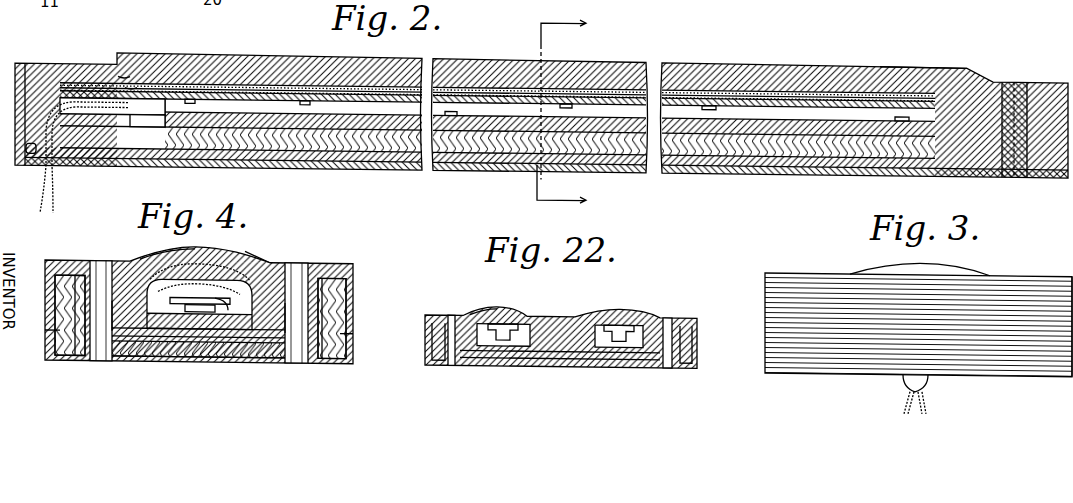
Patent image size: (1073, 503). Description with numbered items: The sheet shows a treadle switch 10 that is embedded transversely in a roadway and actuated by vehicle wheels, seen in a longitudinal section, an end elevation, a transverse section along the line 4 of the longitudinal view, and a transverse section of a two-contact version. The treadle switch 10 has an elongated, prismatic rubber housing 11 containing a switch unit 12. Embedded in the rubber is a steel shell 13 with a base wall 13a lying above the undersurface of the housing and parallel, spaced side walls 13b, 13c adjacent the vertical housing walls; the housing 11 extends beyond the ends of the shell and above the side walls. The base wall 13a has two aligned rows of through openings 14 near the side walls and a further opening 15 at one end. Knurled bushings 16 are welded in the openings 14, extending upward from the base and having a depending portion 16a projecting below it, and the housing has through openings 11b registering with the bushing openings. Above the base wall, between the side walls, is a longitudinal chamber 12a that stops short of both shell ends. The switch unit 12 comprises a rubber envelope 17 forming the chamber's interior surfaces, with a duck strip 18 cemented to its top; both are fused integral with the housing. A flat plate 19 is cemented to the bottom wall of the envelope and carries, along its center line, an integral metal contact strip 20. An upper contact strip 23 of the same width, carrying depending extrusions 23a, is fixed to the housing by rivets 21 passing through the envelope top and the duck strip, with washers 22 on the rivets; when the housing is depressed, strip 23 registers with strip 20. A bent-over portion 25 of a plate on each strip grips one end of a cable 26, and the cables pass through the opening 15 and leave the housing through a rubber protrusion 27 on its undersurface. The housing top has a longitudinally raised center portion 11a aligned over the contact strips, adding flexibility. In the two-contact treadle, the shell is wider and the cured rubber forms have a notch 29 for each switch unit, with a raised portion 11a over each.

In FIG. 2, the section line 4— 4 is at (569, 114).
In FIG. 2, the treadle switch 10 is at (1051, 47).
In FIG. 3, the treadle switch 10 is at (1007, 268).
In FIG. 2, the housing 11 is at (1030, 155).
In FIG. 4, the housing 11 is at (333, 259).
In FIG. 22, the housing 11 is at (697, 335).
In FIG. 3, the housing 11 is at (1058, 312).
In FIG. 2, the raised center portion 11a is at (946, 44).
In FIG. 4, the raised center portion 11a is at (215, 253).
In FIG. 22, the raised center portion 11a is at (620, 306).
In FIG. 3, the raised center portion 11a is at (888, 261).
In FIG. 2, the through openings 11b is at (1017, 58).
In FIG. 4, the through openings 11b is at (96, 261).
In FIG. 22, the through openings 11b is at (452, 315).
In FIG. 2, the switch unit 12 is at (212, 62).
In FIG. 4, the switch unit 12 is at (150, 269).
In FIG. 2, the longitudinal chamber 12a is at (240, 93).
In FIG. 4, the longitudinal chamber 12a is at (170, 361).
In FIG. 2, the steel shell 13 is at (1030, 158).
In FIG. 4, the steel shell 13 is at (228, 360).
In FIG. 22, the steel shell 13 is at (560, 364).
In FIG. 2, the base wall 13a is at (692, 156).
In FIG. 4, the base wall 13a is at (150, 361).
In FIG. 4, the side wall 13b is at (58, 337).
In FIG. 4, the side wall 13c is at (343, 335).
In FIG. 4, the through openings 14 is at (70, 360).
In FIG. 2, the through opening 15 is at (32, 168).
In FIG. 4, the bushings 16 is at (62, 299).
In FIG. 22, the bushings 16 is at (434, 365).
In FIG. 4, the depending portion 16a is at (112, 360).
In FIG. 4, the rubber envelope 17 is at (265, 253).
In FIG. 4, the duck strip 18 is at (232, 261).
In FIG. 2, the flat plate 19 is at (222, 155).
In FIG. 4, the flat plate 19 is at (185, 361).
In FIG. 2, the contact strip 20 is at (298, 156).
In FIG. 4, the contact strip 20 is at (205, 361).
In FIG. 2, the rivets 21 is at (333, 74).
In FIG. 4, the rivets 21 is at (187, 287).
In FIG. 2, the washers 22 is at (362, 78).
In FIG. 4, the washers 22 is at (198, 281).
In FIG. 2, the contact strip 23 is at (683, 78).
In FIG. 4, the contact strip 23 is at (185, 296).
In FIG. 2, the depending extrusions 23a is at (392, 160).
In FIG. 4, the depending extrusions 23a is at (218, 298).
In FIG. 2, the bent-over portion 25 is at (128, 78).
In FIG. 2, the cable 26 is at (56, 202).
In FIG. 3, the cable 26 is at (928, 408).
In FIG. 2, the protrusion 27 is at (58, 172).
In FIG. 3, the protrusion 27 is at (906, 378).
In FIG. 22, the notch 29 is at (503, 345).